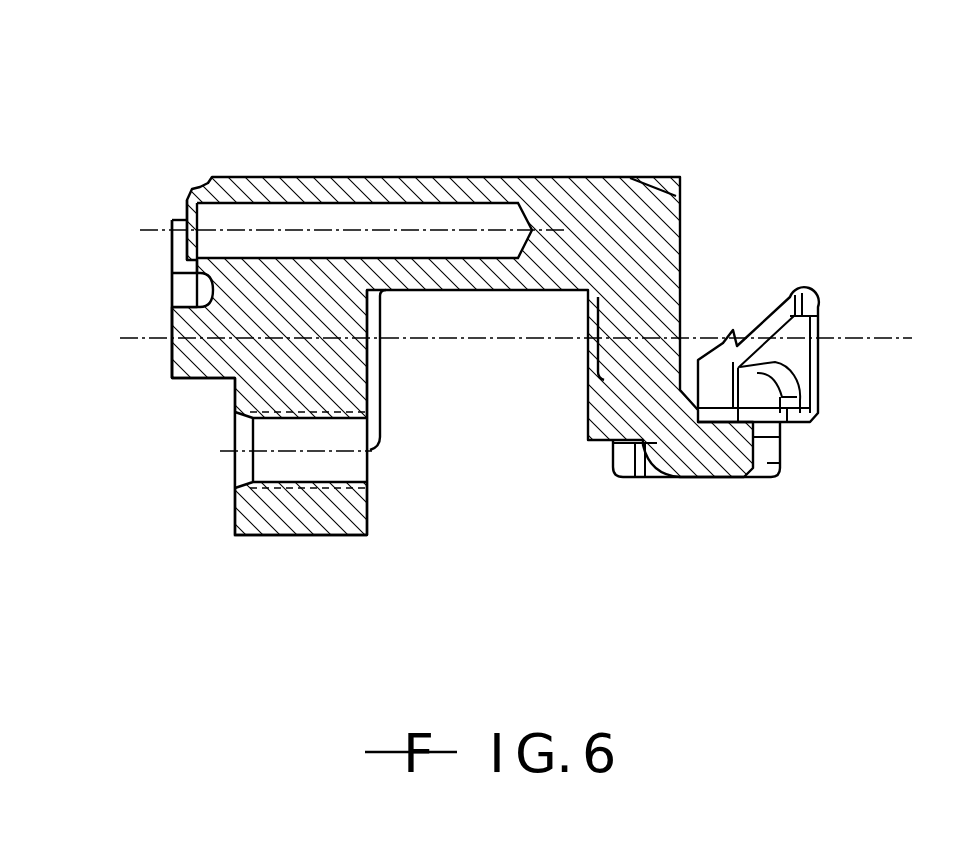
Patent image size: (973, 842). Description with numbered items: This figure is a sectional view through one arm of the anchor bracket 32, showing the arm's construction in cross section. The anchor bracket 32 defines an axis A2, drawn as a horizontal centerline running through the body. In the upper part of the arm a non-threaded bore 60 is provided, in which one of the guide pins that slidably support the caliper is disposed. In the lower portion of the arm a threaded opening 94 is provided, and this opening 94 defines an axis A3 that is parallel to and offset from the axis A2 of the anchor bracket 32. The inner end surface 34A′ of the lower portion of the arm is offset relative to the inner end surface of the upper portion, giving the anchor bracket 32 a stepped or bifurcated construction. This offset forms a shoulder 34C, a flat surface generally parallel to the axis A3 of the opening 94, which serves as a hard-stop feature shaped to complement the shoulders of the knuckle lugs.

The anchor bracket 32 is at (602, 178).
The non-threaded bore 60 is at (326, 205).
The threaded opening 94 is at (323, 481).
The inner end surface of lower portion 34A′ is at (235, 512).
The shoulder 34C is at (197, 380).
The axis of anchor bracket A2 is at (865, 338).
The axis of threaded opening A3 is at (370, 451).